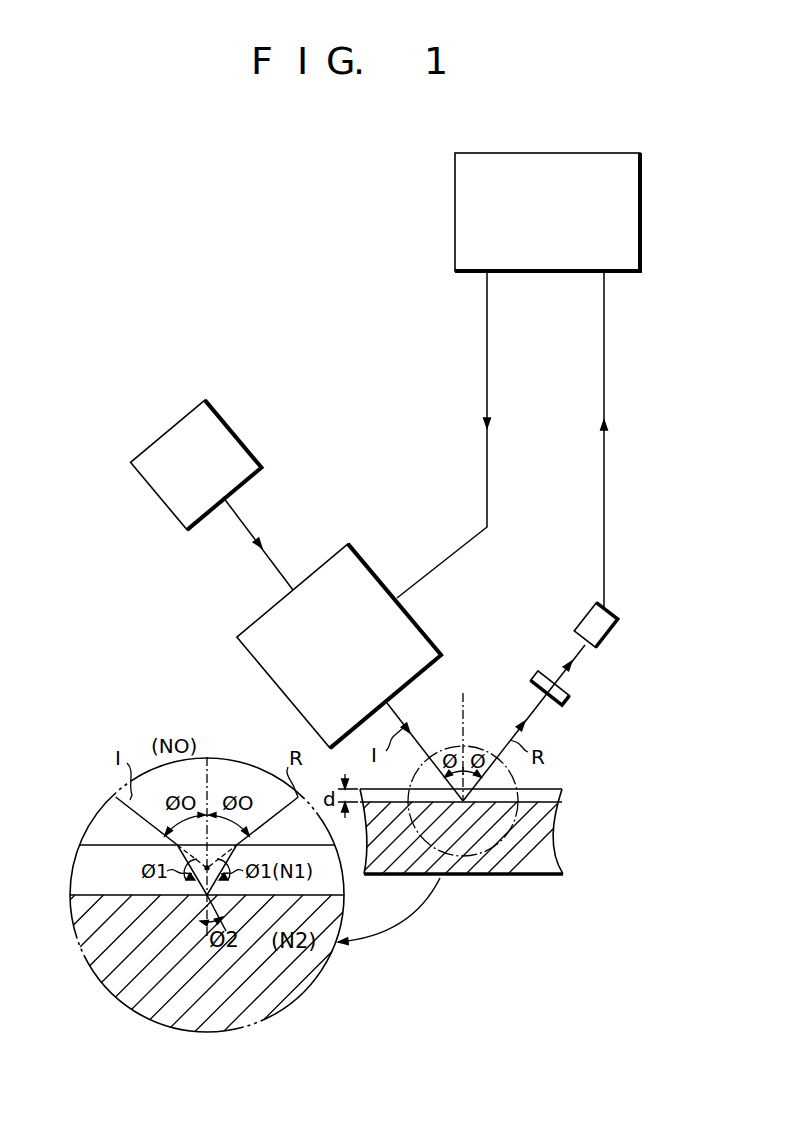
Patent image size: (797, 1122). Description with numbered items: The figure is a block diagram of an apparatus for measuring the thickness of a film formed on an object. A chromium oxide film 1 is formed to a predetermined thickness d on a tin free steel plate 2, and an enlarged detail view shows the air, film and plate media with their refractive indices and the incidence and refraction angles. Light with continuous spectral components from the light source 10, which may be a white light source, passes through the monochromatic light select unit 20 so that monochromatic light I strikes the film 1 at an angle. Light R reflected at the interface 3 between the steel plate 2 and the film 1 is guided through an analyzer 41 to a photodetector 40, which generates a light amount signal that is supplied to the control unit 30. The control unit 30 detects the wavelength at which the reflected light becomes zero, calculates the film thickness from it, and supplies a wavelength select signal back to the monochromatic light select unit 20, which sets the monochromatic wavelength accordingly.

The chromium oxide film 1 is at (562, 796).
The tin free steel plate 2 is at (551, 845).
The interface 3 is at (563, 813).
The light source 10 is at (158, 444).
The monochromatic light select unit 20 is at (337, 561).
The control unit 30 is at (456, 262).
The photodetector 40 is at (604, 620).
The analyzer 41 is at (565, 700).